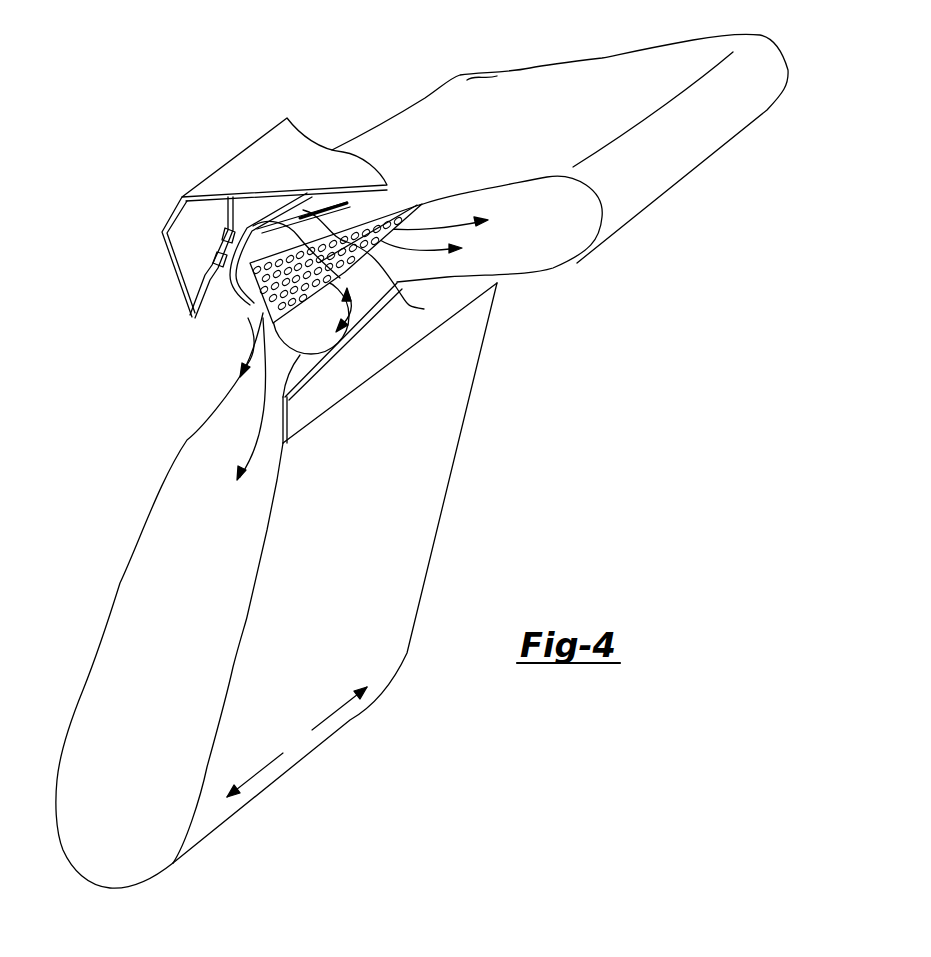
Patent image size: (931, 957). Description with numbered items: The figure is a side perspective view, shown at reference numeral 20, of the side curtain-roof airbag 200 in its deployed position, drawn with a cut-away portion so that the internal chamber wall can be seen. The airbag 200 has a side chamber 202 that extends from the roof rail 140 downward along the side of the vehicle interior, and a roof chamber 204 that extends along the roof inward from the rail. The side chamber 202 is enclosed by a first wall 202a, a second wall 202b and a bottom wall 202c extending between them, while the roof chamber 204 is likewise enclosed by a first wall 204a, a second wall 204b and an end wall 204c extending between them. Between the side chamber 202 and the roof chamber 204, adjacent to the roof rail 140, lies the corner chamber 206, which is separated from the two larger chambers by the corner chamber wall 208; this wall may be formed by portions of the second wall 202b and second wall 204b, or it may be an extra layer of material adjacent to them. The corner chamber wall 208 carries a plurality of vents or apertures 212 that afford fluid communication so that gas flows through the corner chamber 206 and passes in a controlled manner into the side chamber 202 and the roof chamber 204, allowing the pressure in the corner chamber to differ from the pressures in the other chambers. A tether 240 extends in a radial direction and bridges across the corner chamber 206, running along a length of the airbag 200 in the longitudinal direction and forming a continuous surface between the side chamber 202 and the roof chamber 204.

The side perspective view 20 is at (213, 120).
The roof rail 140 is at (168, 232).
The side curtain-roof airbag 200 is at (401, 94).
The side chamber 202 is at (262, 604).
The first wall 202a is at (107, 616).
The second wall 202b is at (243, 634).
The bottom wall 202c is at (100, 888).
The roof chamber 204 is at (527, 135).
The first wall 204a is at (590, 103).
The second wall 204b is at (532, 273).
The end wall 204c is at (627, 192).
The corner chamber 206 is at (296, 361).
The corner chamber wall 208 is at (297, 272).
The vents or apertures 212 is at (337, 435).
The tether 240 is at (392, 322).